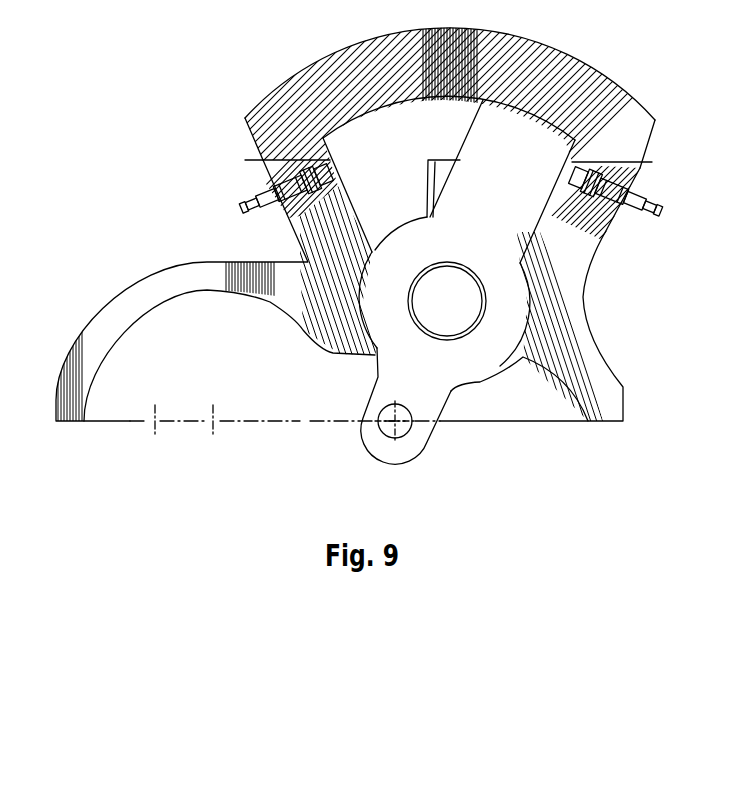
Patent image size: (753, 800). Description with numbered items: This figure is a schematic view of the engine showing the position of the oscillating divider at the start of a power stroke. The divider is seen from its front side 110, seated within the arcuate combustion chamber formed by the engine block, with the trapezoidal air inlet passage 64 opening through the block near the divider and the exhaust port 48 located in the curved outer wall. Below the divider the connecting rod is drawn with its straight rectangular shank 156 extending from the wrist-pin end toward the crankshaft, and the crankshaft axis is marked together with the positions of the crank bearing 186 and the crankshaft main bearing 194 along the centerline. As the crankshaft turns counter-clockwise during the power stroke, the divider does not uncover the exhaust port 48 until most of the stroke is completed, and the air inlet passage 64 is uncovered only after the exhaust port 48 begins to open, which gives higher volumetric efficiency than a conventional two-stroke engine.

The exhaust port 48 is at (460, 26).
The air inlet passage 64 is at (443, 188).
The front side 110 is at (522, 198).
The straight rectangular shank 156 is at (273, 423).
The crank bearing 186 is at (155, 425).
The crankshaft main bearing 194 is at (213, 427).